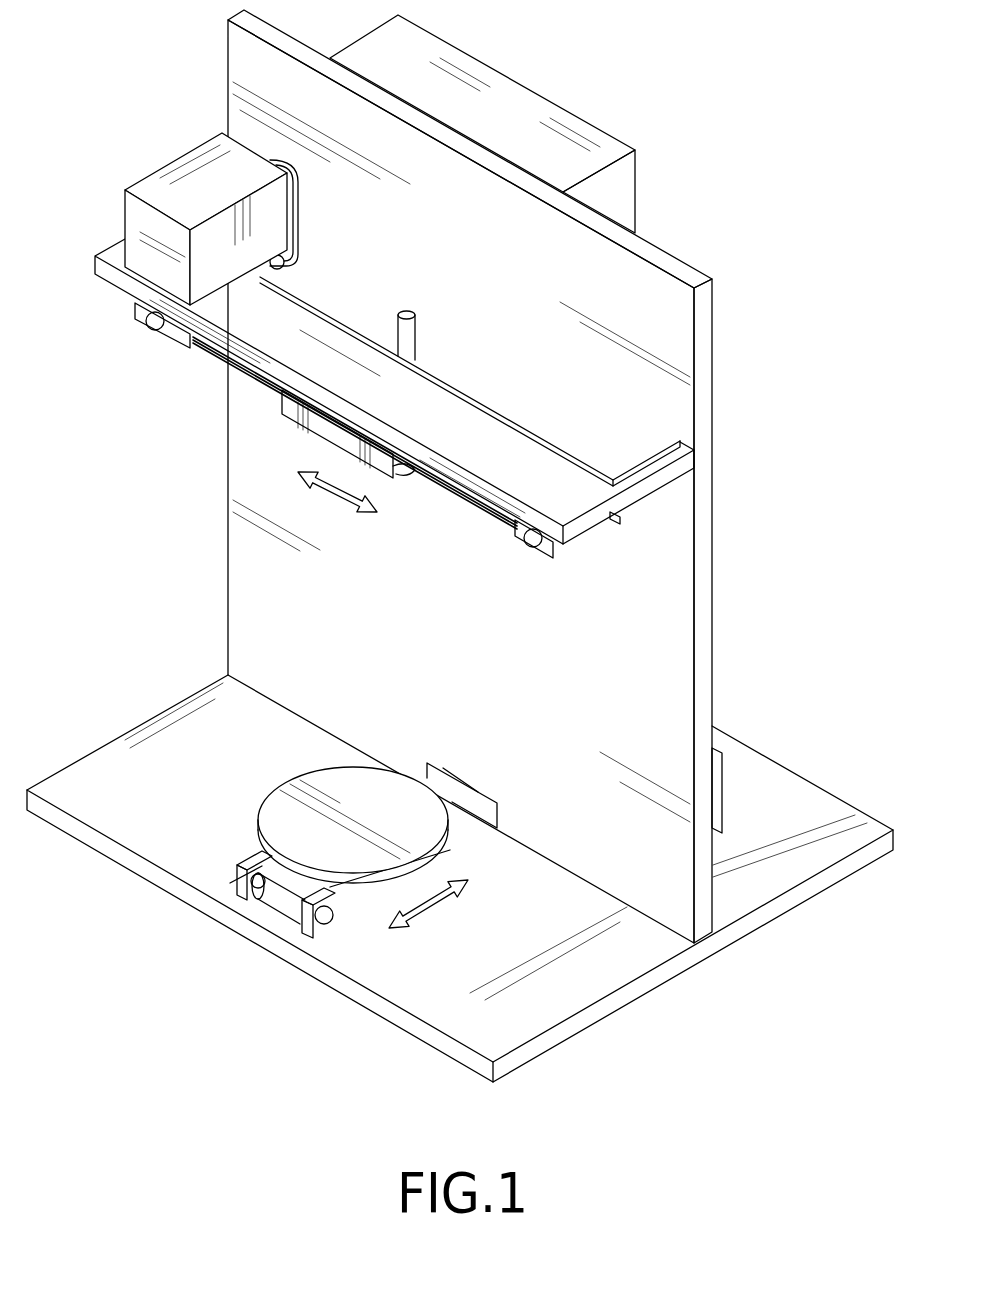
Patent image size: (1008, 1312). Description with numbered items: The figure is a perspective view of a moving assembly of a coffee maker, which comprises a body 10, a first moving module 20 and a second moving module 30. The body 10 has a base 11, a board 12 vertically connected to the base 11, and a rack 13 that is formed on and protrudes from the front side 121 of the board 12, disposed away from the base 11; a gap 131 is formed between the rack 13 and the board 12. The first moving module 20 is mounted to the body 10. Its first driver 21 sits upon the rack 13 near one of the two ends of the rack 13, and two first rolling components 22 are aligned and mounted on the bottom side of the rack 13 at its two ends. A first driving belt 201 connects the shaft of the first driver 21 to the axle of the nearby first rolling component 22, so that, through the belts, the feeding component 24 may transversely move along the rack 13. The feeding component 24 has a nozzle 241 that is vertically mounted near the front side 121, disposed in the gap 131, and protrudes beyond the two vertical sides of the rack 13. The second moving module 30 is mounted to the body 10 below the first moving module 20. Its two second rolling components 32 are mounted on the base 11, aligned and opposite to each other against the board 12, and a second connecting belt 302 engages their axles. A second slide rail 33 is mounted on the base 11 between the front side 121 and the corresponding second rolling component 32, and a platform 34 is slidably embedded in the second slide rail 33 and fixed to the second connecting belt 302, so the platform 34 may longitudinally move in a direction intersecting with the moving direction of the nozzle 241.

The body 10 is at (460, 546).
The base 11 is at (772, 790).
The board 12 is at (508, 476).
The front side 121 is at (668, 320).
The rack 13 is at (425, 402).
The gap 131 is at (580, 441).
The first moving module 20 is at (331, 335).
The first driver 21 is at (115, 206).
The first driving belt 201 is at (290, 258).
The first rolling components 22 is at (172, 348).
The feeding component 24 is at (302, 432).
The nozzle 241 is at (416, 333).
The second moving module 30 is at (332, 850).
The second rolling components 32 is at (235, 919).
The second connecting belt 302 is at (277, 902).
The second slide rail 33 is at (467, 830).
The platform 34 is at (317, 787).